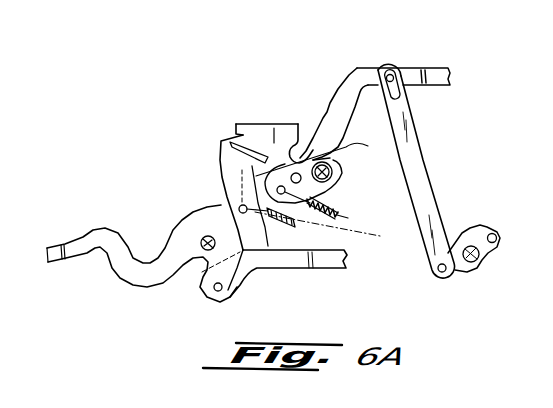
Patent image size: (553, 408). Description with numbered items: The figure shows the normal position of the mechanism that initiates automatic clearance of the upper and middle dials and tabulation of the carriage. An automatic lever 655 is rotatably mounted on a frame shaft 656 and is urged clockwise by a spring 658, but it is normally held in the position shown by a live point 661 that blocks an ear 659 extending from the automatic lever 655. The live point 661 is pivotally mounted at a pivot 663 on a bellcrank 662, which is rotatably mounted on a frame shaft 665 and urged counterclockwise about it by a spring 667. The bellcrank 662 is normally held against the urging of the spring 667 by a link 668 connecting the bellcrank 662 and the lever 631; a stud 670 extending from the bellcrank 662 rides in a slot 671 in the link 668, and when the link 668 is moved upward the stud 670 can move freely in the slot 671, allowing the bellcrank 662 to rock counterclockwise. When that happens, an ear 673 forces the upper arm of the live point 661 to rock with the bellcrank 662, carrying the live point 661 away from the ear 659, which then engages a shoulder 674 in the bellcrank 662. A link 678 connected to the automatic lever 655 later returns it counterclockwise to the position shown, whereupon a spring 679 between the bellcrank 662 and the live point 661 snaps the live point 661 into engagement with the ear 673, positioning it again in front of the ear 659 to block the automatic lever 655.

The lever 631 is at (482, 263).
The automatic lever 655 is at (149, 280).
The frame shaft 656 is at (204, 237).
The spring 658 is at (263, 216).
The ear 659 is at (230, 143).
The live point 661 is at (266, 151).
The bellcrank 662 is at (345, 84).
The pivot 663 is at (302, 182).
The frame shaft 665 is at (333, 172).
The spring 667 is at (346, 219).
The link 668 is at (430, 175).
The stud 670 is at (386, 70).
The slot 671 is at (407, 96).
The ear 673 is at (300, 122).
The shoulder 674 is at (235, 133).
The link 678 is at (317, 268).
The spring 679 is at (337, 152).